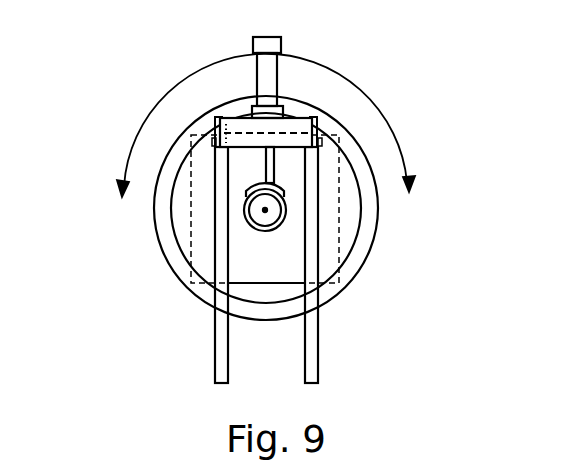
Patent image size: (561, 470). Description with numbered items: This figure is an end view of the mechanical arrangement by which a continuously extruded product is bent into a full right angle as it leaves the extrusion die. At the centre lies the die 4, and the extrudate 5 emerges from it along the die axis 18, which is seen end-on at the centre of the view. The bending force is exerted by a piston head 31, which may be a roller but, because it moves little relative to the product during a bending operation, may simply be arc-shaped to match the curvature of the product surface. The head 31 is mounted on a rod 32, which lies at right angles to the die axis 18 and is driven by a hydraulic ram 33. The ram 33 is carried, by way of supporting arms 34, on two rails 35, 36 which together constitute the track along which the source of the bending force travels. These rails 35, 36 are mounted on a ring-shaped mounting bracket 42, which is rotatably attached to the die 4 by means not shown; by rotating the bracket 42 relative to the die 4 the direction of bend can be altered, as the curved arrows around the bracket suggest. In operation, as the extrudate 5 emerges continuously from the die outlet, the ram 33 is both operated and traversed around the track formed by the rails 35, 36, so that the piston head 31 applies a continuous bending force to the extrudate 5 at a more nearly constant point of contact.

The die 4 is at (192, 209).
The extrudate 5 is at (286, 214).
The die axis 18 is at (265, 212).
The piston head 31 is at (268, 155).
The rod 32 is at (250, 183).
The ram 33 is at (270, 74).
The supporting arms 34 is at (313, 136).
The rail 35 is at (213, 339).
The rail 36 is at (318, 342).
The ring-shaped mounting bracket 42 is at (171, 250).